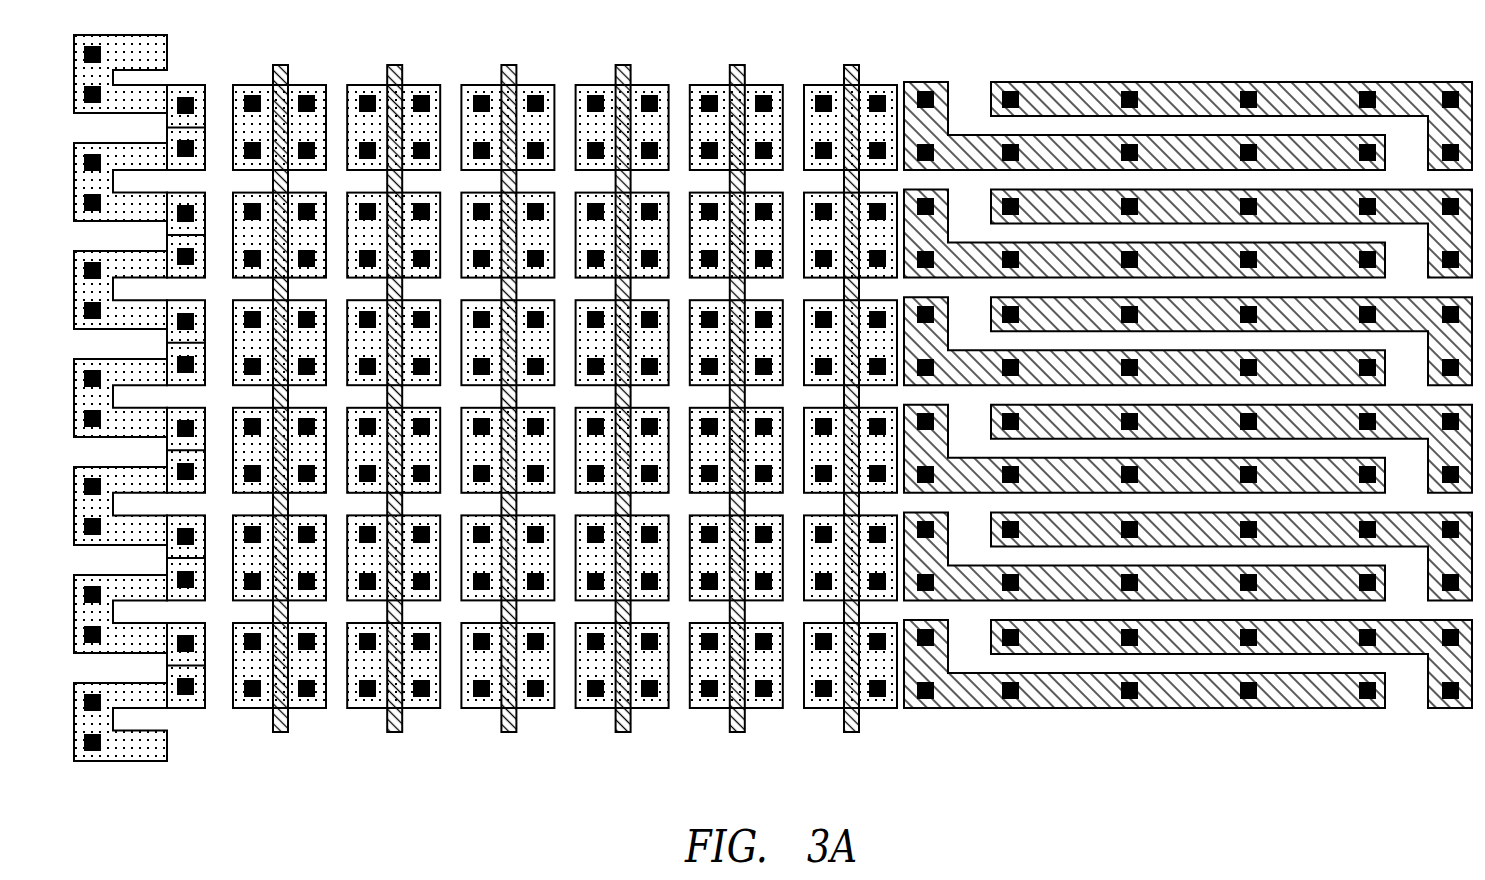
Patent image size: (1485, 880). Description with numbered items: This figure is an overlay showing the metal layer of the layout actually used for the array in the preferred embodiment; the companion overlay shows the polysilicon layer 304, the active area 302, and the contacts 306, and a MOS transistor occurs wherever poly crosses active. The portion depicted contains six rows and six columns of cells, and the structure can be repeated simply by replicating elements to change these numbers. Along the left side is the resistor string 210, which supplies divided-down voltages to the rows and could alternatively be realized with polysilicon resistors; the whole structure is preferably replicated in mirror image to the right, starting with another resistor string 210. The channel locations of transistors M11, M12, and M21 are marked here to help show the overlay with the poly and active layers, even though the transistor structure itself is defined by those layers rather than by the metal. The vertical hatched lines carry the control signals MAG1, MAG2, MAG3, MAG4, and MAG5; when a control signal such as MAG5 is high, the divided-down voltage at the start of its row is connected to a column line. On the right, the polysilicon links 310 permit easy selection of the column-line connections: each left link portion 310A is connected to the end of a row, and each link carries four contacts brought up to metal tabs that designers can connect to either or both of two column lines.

The resistor string 210 is at (117, 786).
The active area 302 is at (521, 421).
The polysilicon layer 304 is at (557, 427).
The contacts 306 is at (187, 698).
The polysilicon links 310 is at (1188, 389).
The left link portion 310A is at (1060, 710).
The transistor M11 is at (262, 125).
The transistor M12 is at (372, 123).
The transistor M21 is at (262, 226).
The control signal MAG1 is at (277, 384).
The control signal MAG2 is at (391, 384).
The control signal MAG3 is at (505, 384).
The control signal MAG4 is at (619, 384).
The control signal MAG5 is at (734, 384).